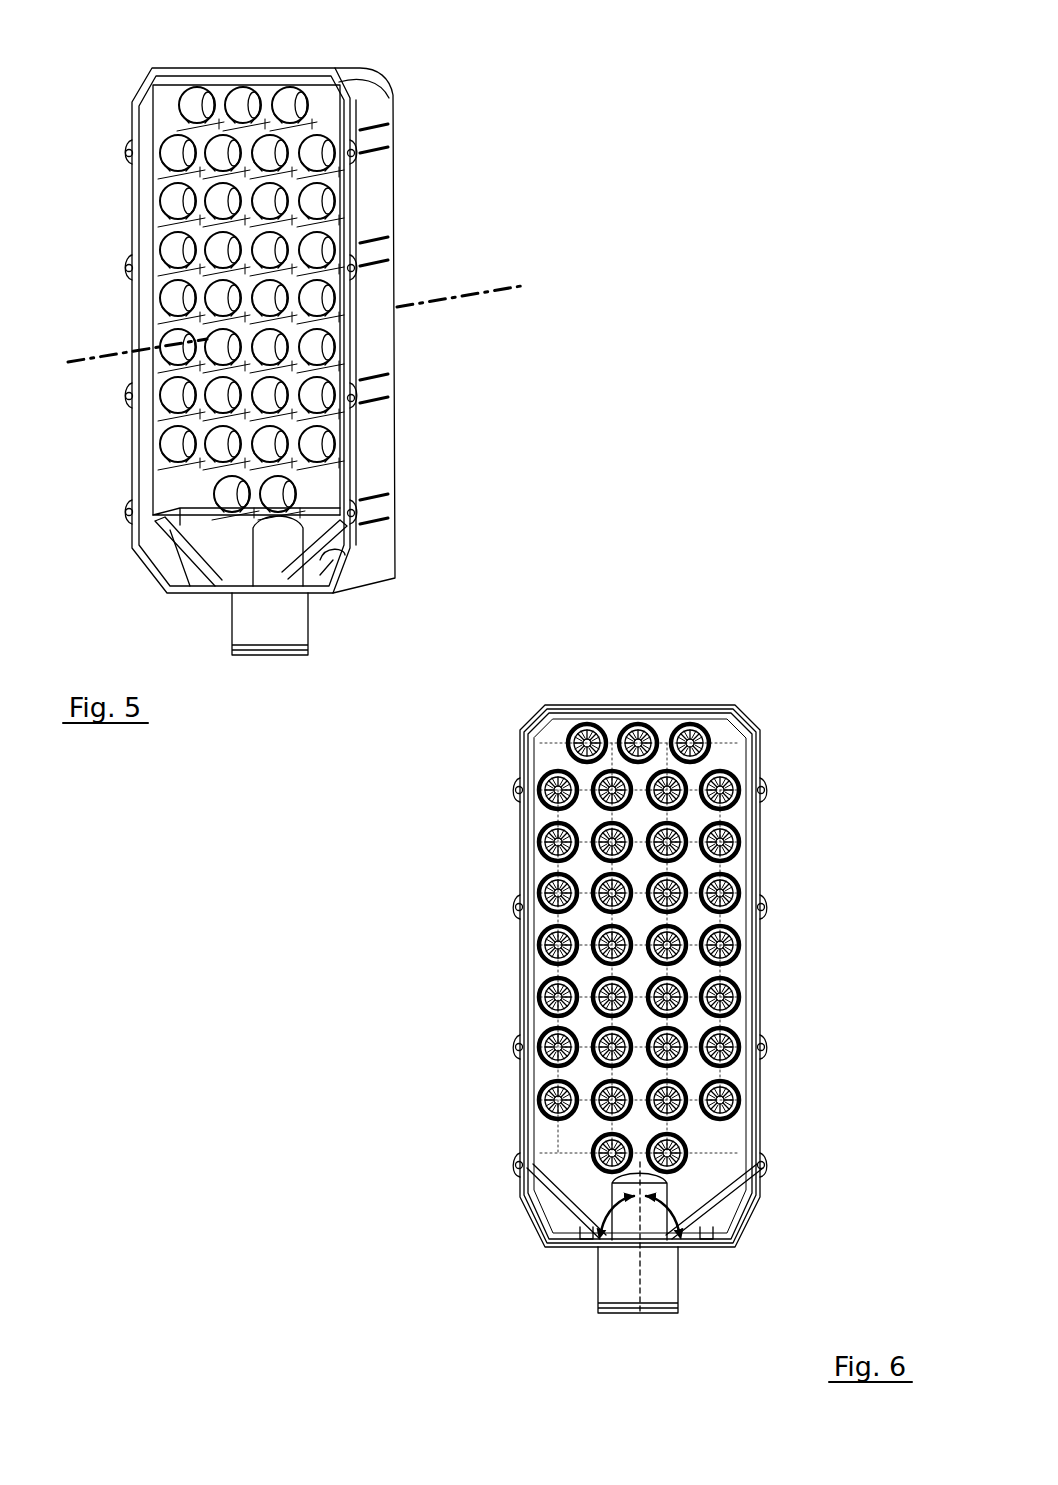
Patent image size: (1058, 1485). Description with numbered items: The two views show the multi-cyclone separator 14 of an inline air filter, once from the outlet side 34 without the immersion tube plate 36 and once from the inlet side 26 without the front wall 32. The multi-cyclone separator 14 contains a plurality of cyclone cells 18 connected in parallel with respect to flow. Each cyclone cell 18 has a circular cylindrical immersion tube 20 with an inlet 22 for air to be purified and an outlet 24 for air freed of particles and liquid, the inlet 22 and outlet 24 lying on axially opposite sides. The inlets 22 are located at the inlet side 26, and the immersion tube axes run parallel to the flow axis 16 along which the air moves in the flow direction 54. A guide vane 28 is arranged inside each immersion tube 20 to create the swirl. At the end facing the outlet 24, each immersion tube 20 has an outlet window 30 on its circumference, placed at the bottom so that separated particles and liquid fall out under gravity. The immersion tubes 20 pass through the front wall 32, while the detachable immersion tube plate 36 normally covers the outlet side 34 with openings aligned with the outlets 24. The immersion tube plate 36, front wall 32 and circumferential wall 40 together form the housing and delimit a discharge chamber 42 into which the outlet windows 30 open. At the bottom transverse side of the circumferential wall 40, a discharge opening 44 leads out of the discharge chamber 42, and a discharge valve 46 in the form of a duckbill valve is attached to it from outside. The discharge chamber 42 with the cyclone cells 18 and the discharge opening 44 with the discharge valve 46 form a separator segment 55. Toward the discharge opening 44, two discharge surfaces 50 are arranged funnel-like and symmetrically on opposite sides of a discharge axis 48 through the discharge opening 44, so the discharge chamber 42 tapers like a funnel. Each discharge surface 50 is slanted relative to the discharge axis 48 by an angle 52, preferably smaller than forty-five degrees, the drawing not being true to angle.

In FIG. 5, the multi-cyclone separator 14 is at (82, 72).
In FIG. 6, the multi-cyclone separator 14 is at (725, 682).
In FIG. 5, the flow axis 16 is at (76, 355).
In FIG. 5, the cyclone cell 18 is at (328, 115).
In FIG. 6, the cyclone cell 18 is at (742, 766).
In FIG. 5, the immersion tube 20 is at (317, 103).
In FIG. 6, the immersion tube 20 is at (742, 834).
In FIG. 6, the inlet 22 is at (738, 885).
In FIG. 5, the outlet 24 is at (315, 400).
In FIG. 5, the inlet side 26 is at (412, 356).
In FIG. 6, the inlet side 26 is at (745, 1028).
In FIG. 6, the guide vane 28 is at (745, 940).
In FIG. 5, the outlet window 30 is at (230, 517).
In FIG. 5, the front wall 32 is at (340, 488).
In FIG. 5, the outlet side 34 is at (103, 403).
In FIG. 6, the immersion tube plate 36 is at (550, 1135).
In FIG. 5, the circumferential wall 40 is at (369, 78).
In FIG. 6, the circumferential wall 40 is at (760, 718).
In FIG. 5, the discharge chamber 42 is at (170, 488).
In FIG. 6, the discharge chamber 42 is at (550, 1142).
In FIG. 5, the discharge opening 44 is at (273, 580).
In FIG. 6, the discharge opening 44 is at (643, 1247).
In FIG. 5, the discharge valve 46 is at (293, 620).
In FIG. 6, the discharge valve 46 is at (657, 1279).
In FIG. 6, the discharge axis 48 is at (633, 1279).
In FIG. 5, the discharge surface 50 is at (335, 537).
In FIG. 6, the discharge surface 50 is at (545, 1178).
In FIG. 6, the angle 52 is at (535, 1213).
In FIG. 5, the flow direction 54 is at (432, 278).
In FIG. 5, the separator segment 55 is at (310, 176).
In FIG. 6, the separator segment 55 is at (748, 972).